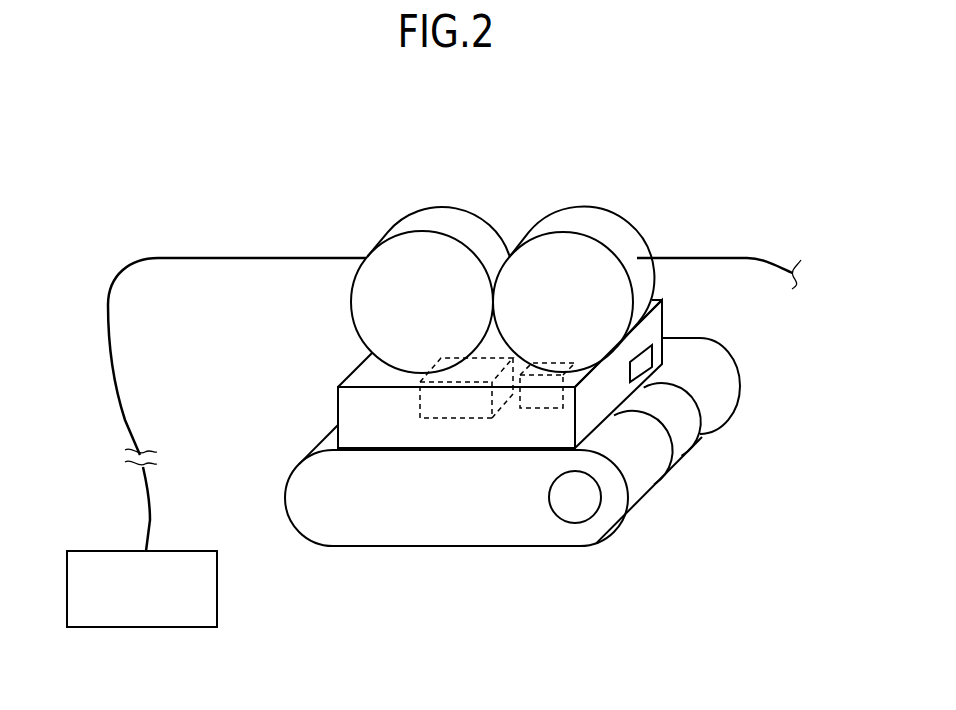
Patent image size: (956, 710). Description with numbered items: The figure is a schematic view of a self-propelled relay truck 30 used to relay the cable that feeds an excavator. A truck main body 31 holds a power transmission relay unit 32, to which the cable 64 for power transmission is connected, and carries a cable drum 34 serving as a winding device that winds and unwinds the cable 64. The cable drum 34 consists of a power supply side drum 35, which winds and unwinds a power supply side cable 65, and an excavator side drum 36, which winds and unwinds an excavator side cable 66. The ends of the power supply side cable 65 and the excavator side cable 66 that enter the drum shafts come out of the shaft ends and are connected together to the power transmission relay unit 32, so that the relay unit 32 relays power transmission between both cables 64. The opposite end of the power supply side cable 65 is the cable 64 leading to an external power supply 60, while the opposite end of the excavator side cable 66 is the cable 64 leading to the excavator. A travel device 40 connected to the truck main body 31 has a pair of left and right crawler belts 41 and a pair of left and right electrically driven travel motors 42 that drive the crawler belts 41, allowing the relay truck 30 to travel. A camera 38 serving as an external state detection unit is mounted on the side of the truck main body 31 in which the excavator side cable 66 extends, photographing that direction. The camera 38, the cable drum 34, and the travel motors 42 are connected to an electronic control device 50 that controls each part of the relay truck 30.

The relay truck 30 is at (527, 149).
The truck main body 31 is at (353, 373).
The power transmission relay unit 32 is at (420, 403).
The cable drum 34 is at (502, 260).
The power supply side drum 35 is at (447, 215).
The excavator side drum 36 is at (587, 213).
The camera 38 is at (645, 357).
The travel device 40 is at (462, 563).
The crawler belts 41 is at (640, 488).
The travel motors 42 is at (575, 523).
The electronic control device 50 is at (543, 408).
The external power supply 60 is at (188, 548).
The cable 64 is at (454, 381).
The power supply side cable 65 is at (228, 253).
The excavator side cable 66 is at (722, 255).